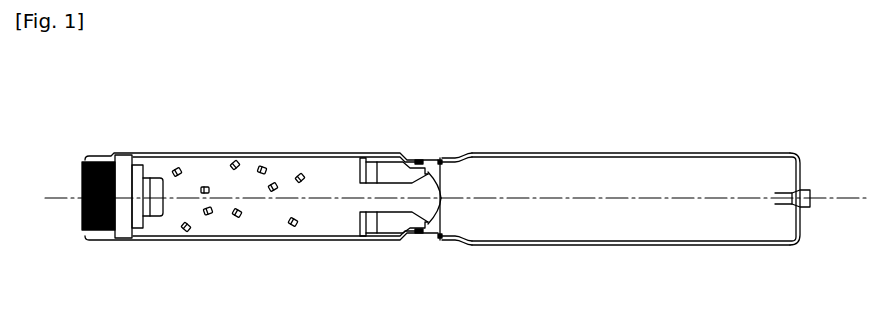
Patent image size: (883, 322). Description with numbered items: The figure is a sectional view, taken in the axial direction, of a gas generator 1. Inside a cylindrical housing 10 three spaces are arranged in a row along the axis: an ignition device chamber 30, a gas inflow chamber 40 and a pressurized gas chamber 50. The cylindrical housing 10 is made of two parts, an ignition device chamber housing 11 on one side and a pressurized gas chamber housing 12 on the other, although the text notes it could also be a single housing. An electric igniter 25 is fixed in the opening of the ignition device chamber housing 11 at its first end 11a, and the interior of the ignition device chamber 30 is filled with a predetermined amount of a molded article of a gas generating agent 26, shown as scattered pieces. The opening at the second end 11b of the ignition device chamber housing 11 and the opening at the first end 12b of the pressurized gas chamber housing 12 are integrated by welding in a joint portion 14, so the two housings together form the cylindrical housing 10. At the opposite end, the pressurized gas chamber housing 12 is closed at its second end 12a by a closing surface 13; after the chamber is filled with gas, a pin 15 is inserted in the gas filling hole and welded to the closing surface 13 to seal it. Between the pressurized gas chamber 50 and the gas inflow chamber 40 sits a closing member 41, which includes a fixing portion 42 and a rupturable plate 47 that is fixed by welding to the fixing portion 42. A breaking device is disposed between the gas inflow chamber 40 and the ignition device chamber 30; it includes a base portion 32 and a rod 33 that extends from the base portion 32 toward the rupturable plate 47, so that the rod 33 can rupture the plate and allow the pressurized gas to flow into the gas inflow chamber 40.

The gas generator 1 is at (525, 250).
The cylindrical housing 10 is at (418, 83).
The ignition device chamber housing 11 is at (327, 152).
The first end 11a is at (82, 241).
The second end 11b is at (436, 238).
The pressurized gas chamber housing 12 is at (515, 150).
The second end 12a is at (797, 156).
The first end 12b is at (441, 241).
The closing surface 13 is at (792, 219).
The joint portion 14 is at (441, 157).
The pin 15 is at (811, 193).
The electric igniter 25 is at (127, 177).
The gas generating agent 26 is at (229, 160).
The ignition device chamber 30 is at (338, 189).
The base portion 32 is at (365, 233).
The rod 33 is at (400, 201).
The gas inflow chamber 40 is at (405, 180).
The closing member 41 is at (500, 180).
The fixing portion 42 is at (442, 170).
The rupturable plate 47 is at (442, 212).
The pressurized gas chamber 50 is at (628, 184).